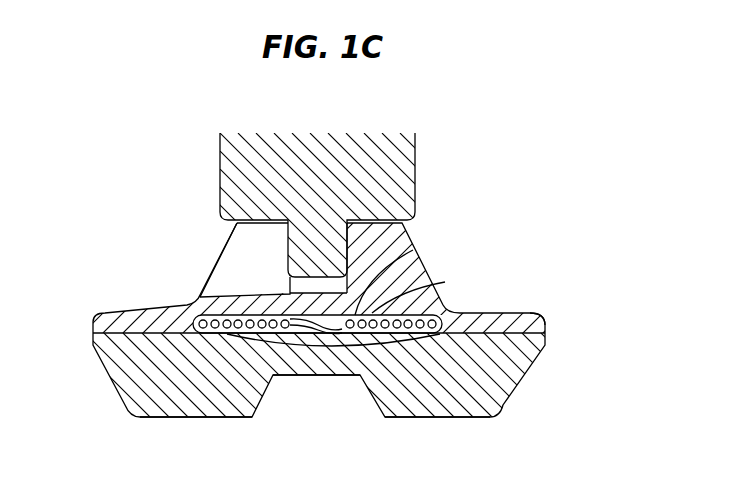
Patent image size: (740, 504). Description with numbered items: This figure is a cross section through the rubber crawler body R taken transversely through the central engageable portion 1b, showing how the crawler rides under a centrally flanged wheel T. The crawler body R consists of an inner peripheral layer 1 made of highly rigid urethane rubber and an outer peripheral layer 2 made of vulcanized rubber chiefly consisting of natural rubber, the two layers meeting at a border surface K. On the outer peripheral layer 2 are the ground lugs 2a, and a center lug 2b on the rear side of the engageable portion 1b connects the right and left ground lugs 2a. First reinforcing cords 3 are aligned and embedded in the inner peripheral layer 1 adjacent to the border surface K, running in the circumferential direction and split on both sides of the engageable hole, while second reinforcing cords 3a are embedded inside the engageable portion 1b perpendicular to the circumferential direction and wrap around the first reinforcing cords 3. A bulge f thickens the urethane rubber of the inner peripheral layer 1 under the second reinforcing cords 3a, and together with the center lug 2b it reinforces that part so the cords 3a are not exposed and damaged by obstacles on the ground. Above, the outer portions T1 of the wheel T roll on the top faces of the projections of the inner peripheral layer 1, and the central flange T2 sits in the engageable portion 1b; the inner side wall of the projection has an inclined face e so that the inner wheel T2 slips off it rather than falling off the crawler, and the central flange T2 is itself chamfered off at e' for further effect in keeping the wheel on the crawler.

The inner peripheral layer 1 is at (510, 312).
The engageable portion 1b is at (323, 292).
The outer peripheral layer 2 is at (521, 384).
The ground lug 2a is at (453, 393).
The center lug 2b is at (206, 395).
The first reinforcing cords 3 is at (420, 296).
The second reinforcing cords 3a is at (362, 305).
The rubber crawler body R is at (545, 315).
The border surface K is at (150, 335).
The centrally flanged wheel T is at (313, 168).
The outer portions of the centrally flanged wheel T1 is at (455, 152).
The central flange T2 is at (355, 315).
The inclined face e is at (318, 181).
The chamfer e' is at (317, 259).
The bulge f is at (293, 340).